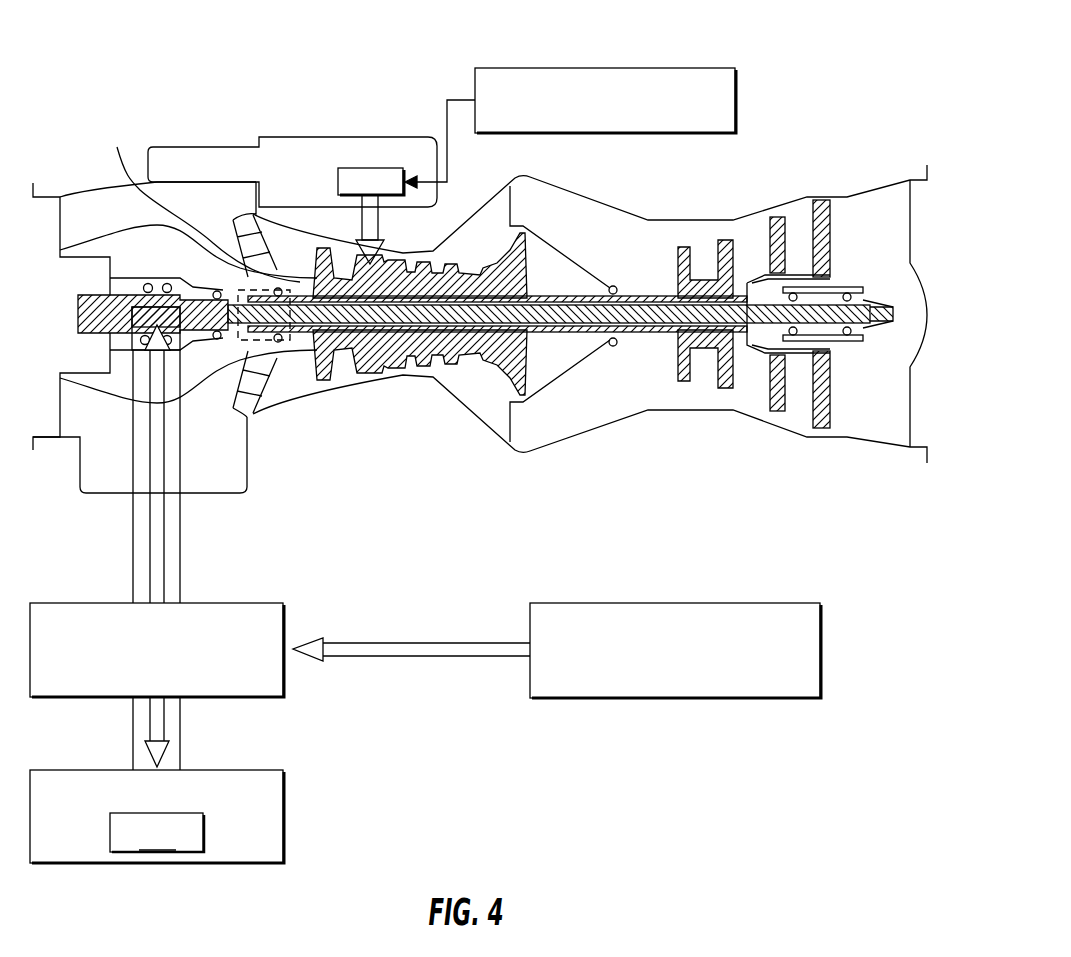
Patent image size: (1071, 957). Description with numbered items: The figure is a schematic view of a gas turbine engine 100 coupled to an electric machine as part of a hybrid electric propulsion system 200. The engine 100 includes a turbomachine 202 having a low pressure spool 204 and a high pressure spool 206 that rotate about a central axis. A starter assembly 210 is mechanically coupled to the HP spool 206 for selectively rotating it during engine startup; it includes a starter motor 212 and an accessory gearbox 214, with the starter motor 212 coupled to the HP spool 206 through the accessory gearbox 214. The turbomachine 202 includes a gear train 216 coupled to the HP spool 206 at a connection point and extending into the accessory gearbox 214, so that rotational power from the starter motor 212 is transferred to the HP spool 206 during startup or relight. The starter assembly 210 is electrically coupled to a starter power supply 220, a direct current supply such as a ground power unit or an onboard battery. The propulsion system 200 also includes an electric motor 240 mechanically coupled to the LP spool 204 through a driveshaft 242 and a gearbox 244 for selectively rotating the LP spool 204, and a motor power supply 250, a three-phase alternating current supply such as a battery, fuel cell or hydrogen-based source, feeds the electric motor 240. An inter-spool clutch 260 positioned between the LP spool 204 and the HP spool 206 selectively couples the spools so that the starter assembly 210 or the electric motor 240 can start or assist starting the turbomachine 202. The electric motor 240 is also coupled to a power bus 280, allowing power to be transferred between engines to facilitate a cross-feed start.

The gas turbine engine 100 is at (820, 147).
The hybrid electric propulsion system 200 is at (278, 143).
The turbomachine 202 is at (645, 232).
The low pressure (LP) spool 204 is at (470, 320).
The high pressure (HP) spool 206 is at (540, 338).
The starter assembly 210 is at (570, 100).
The starter motor 212 is at (375, 168).
The accessory gearbox 214 is at (283, 140).
The gear train 216 is at (201, 198).
The starter power supply 220 is at (660, 68).
The electric motor 240 is at (252, 690).
The driveshaft 242 is at (130, 367).
The gearbox 244 is at (133, 315).
The motor power supply 250 is at (822, 645).
The inter-spool clutch 260 is at (255, 352).
The power bus 280 is at (130, 724).